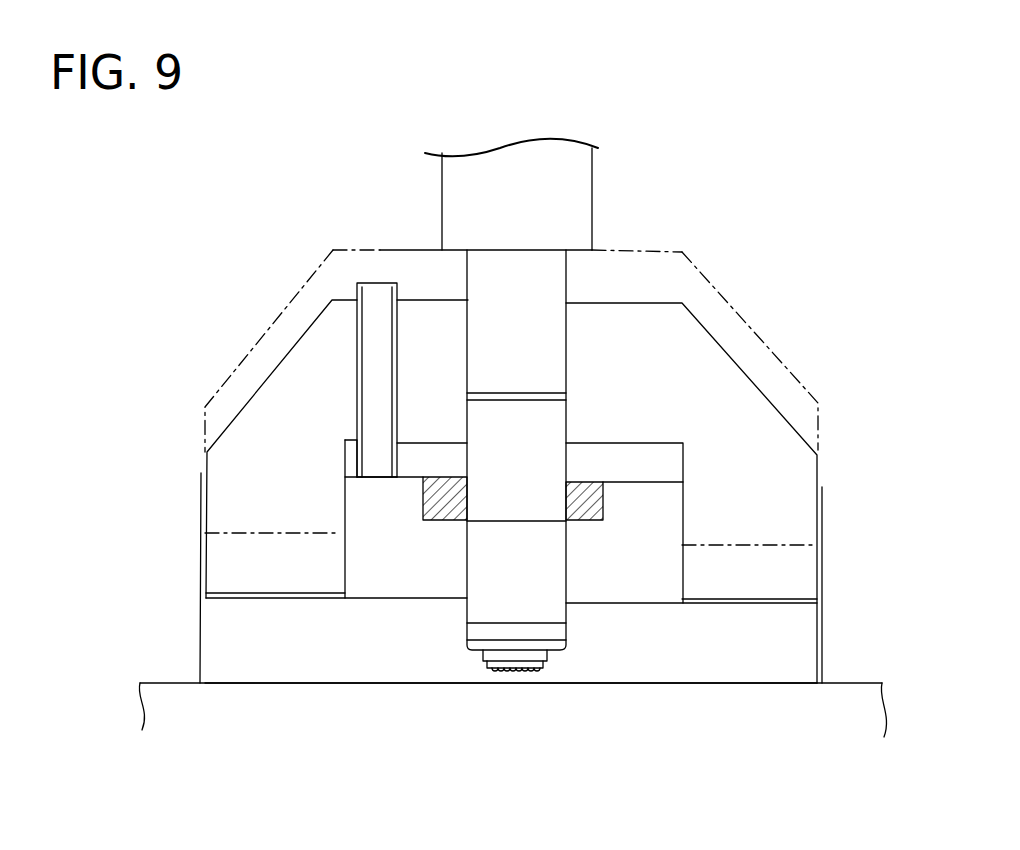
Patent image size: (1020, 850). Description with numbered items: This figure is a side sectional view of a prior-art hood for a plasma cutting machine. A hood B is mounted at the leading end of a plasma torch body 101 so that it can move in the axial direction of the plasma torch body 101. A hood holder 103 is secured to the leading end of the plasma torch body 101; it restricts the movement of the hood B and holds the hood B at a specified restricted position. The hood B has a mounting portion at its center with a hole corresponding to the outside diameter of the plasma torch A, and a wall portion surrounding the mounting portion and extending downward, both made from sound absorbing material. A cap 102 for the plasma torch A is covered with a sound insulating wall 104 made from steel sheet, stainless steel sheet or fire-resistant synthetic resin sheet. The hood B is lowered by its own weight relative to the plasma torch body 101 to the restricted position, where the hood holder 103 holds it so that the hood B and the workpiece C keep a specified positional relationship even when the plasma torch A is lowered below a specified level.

The plasma torch A is at (552, 128).
The hood B is at (737, 343).
The workpiece C is at (847, 680).
The plasma torch body 101 is at (545, 288).
The cap 102 is at (528, 672).
The hood holder 103 is at (440, 513).
The sound insulating wall 104 is at (200, 623).